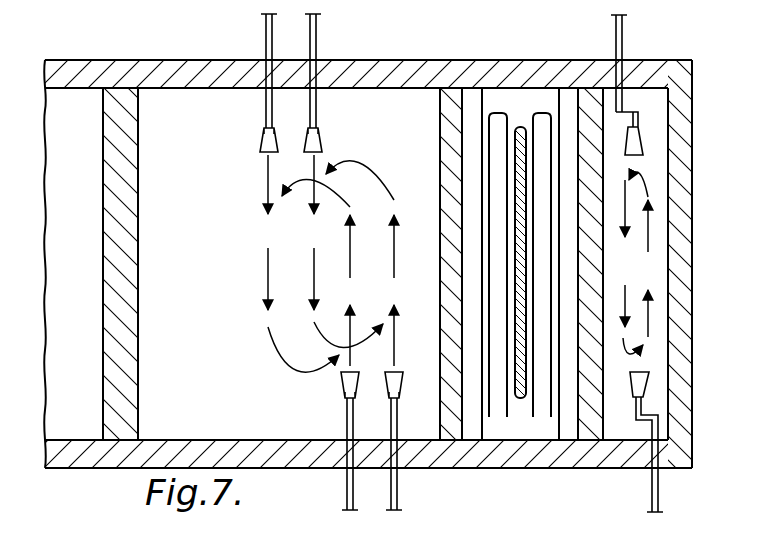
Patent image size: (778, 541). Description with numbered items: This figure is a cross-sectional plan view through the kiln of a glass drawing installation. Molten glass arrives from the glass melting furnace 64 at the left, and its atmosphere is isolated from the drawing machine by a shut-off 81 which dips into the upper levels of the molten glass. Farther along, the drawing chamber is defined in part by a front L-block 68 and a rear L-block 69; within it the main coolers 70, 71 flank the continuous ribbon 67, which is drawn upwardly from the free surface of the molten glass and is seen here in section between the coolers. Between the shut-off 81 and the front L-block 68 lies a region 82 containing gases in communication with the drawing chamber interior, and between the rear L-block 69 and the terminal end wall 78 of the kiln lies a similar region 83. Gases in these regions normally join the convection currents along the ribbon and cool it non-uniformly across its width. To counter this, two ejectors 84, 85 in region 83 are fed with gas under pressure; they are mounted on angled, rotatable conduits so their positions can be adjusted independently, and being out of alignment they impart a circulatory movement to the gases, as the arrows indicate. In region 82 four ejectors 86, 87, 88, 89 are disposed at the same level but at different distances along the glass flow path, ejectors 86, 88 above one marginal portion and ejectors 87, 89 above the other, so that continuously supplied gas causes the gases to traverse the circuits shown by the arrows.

The glass melting furnace 64 is at (82, 277).
The continuous ribbon 67 is at (520, 400).
The front L-block 68 is at (450, 130).
The rear L-block 69 is at (589, 125).
The main cooler 70 is at (497, 130).
The main cooler 71 is at (540, 130).
The terminal end wall 78 is at (692, 205).
The shut-off 81 is at (118, 263).
The region 82 is at (244, 277).
The region 83 is at (653, 279).
The ejector 84 is at (640, 137).
The ejector 85 is at (650, 382).
The ejector 86 is at (400, 385).
The ejector 87 is at (322, 138).
The ejector 88 is at (342, 380).
The ejector 89 is at (262, 137).